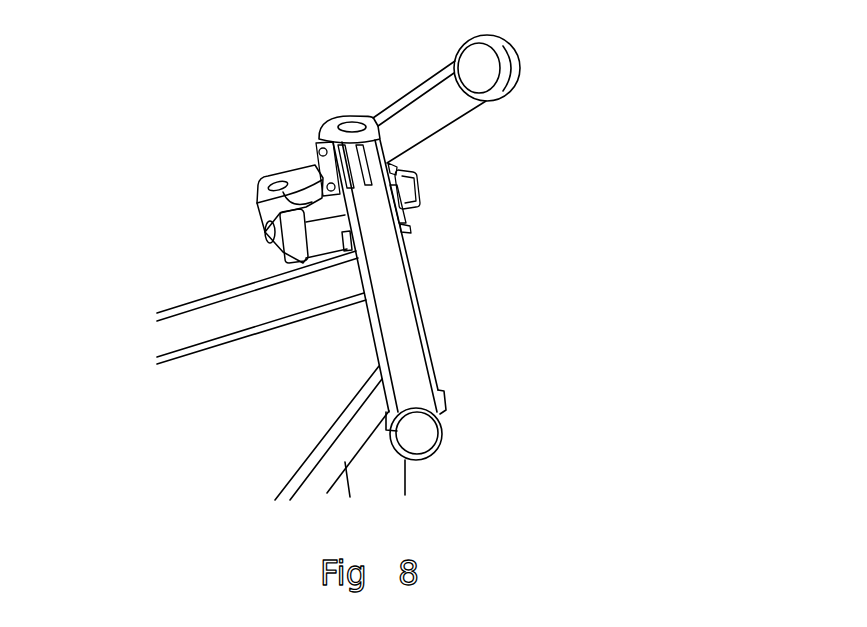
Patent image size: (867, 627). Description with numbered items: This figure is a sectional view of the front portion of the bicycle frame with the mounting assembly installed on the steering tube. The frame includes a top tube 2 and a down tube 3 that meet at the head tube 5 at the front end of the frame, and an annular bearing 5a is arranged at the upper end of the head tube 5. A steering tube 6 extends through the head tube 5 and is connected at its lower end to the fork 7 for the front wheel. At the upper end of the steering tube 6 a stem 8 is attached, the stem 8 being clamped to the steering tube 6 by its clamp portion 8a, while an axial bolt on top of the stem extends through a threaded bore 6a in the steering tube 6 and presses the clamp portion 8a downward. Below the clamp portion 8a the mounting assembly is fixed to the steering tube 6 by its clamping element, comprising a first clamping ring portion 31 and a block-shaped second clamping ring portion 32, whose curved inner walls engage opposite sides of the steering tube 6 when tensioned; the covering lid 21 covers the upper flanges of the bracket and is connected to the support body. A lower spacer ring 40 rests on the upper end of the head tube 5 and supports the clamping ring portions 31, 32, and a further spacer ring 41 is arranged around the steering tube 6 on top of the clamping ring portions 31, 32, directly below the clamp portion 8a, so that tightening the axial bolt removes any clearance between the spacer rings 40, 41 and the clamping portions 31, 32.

The top tube 2 is at (203, 302).
The down tube 3 is at (331, 426).
The head tube 5 is at (430, 346).
The annular bearing 5a is at (408, 228).
The steering tube 6 is at (407, 320).
The bore 6a is at (372, 150).
The fork 7 is at (378, 482).
The stem 8 is at (406, 97).
The clamp portion 8a is at (327, 163).
The covering lid 21 is at (300, 177).
The first clamping ring portion 31 is at (417, 187).
The second clamping ring portion 32 is at (325, 232).
The lower spacer ring 40 is at (404, 212).
The spacer ring 41 is at (398, 168).